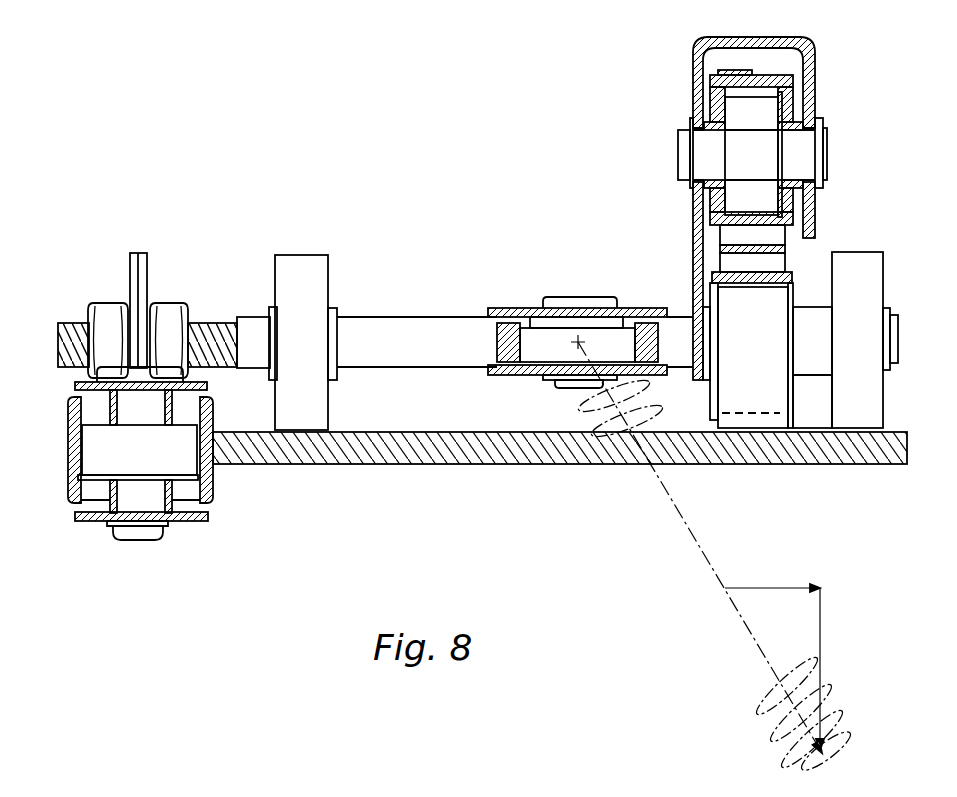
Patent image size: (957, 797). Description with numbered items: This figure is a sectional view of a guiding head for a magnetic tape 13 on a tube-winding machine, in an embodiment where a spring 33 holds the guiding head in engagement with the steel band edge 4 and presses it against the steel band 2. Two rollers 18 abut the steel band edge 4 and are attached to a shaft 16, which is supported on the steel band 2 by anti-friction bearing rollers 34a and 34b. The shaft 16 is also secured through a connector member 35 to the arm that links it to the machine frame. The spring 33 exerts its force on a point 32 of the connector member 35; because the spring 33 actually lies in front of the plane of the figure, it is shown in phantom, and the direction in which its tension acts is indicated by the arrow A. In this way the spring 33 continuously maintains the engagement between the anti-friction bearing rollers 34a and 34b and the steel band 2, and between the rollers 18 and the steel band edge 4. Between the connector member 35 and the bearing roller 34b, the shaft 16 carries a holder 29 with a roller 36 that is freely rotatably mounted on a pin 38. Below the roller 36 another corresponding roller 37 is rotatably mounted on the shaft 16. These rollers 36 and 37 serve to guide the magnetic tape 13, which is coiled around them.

The steel band 2 is at (458, 434).
The steel band edge 4 is at (217, 458).
The magnetic tape 13 is at (730, 235).
The shaft 16 is at (227, 325).
The roller 18 is at (217, 493).
The holder 29 is at (693, 92).
The point 32 is at (577, 340).
The spring 33 is at (757, 709).
The anti-friction bearing roller 34a is at (320, 278).
The anti-friction bearing roller 34b is at (870, 402).
The connector member 35 is at (507, 308).
The roller 36 is at (800, 84).
The roller 37 is at (795, 266).
The pin 38 is at (805, 143).
The arrow A is at (828, 753).